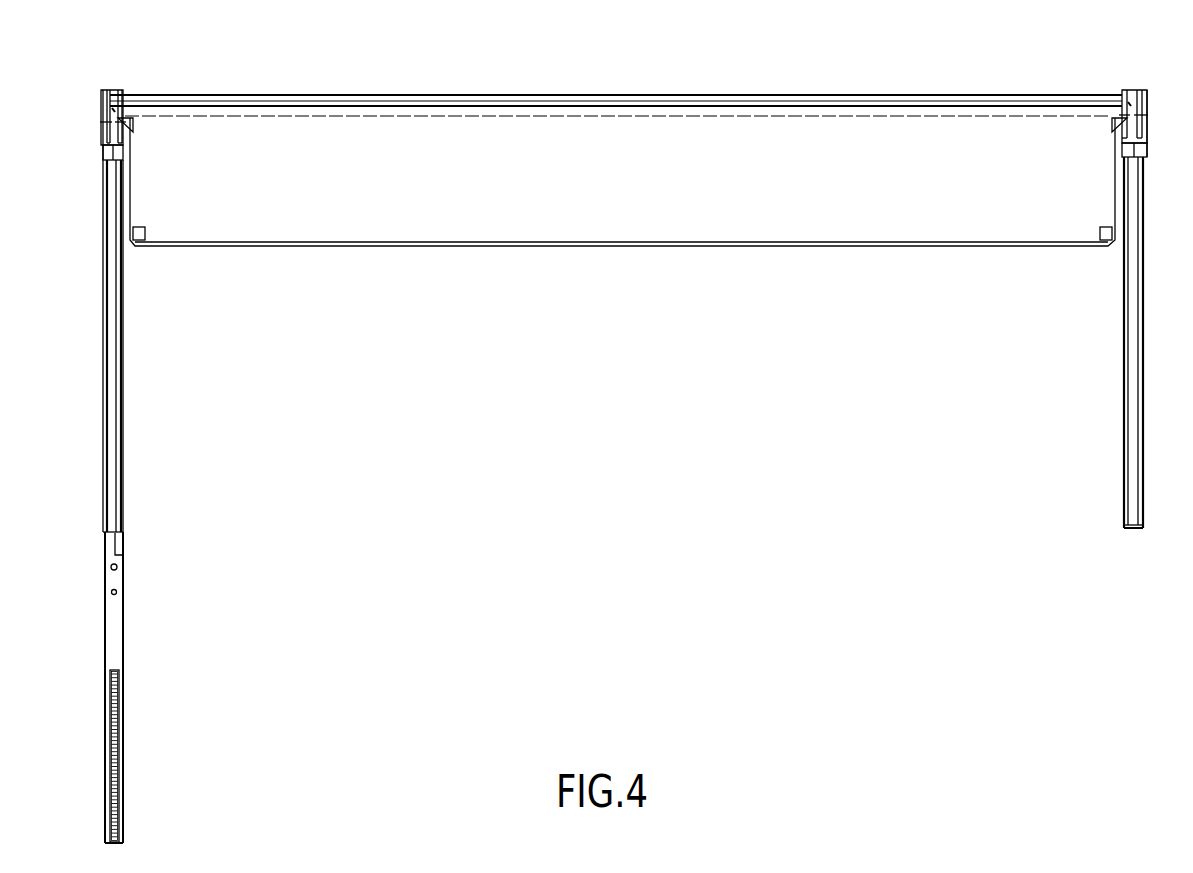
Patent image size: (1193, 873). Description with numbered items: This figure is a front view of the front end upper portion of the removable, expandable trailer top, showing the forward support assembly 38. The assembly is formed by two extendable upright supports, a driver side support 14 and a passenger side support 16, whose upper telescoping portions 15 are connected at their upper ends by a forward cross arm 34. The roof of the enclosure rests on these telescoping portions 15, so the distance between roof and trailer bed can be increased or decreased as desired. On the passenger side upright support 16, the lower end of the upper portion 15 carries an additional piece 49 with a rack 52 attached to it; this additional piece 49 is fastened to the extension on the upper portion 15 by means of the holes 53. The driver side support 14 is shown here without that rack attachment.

The forward support assembly 38 is at (672, 92).
The forward cross arm 34 is at (880, 152).
The upper telescoping portion 15 is at (118, 415).
The driver side support 14 is at (1125, 467).
The passenger side support 16 is at (124, 568).
The holes 53 is at (127, 594).
The additional piece 49 is at (118, 637).
The rack 52 is at (120, 780).